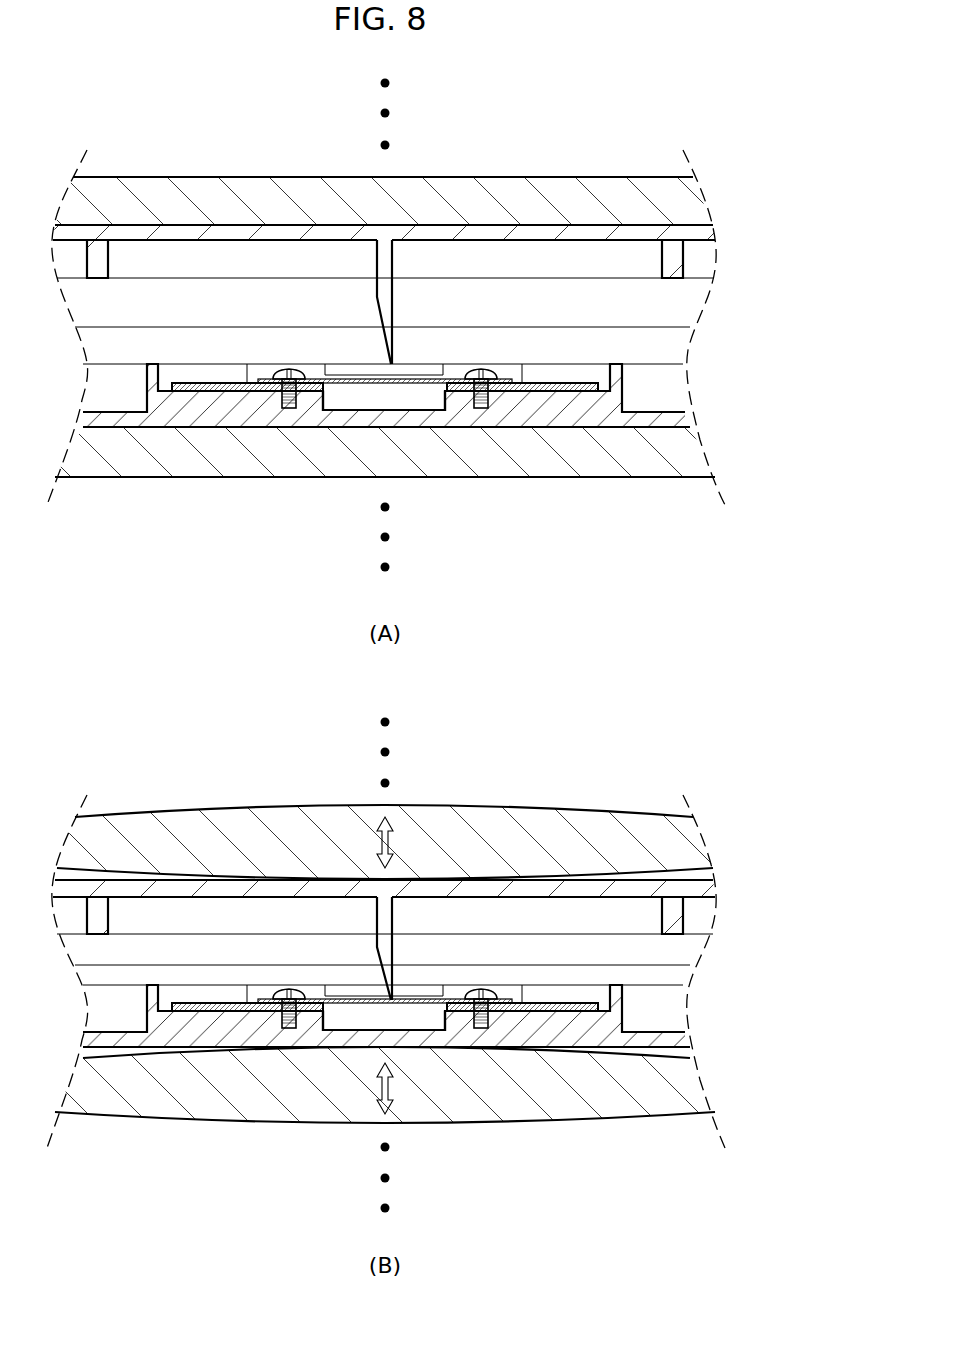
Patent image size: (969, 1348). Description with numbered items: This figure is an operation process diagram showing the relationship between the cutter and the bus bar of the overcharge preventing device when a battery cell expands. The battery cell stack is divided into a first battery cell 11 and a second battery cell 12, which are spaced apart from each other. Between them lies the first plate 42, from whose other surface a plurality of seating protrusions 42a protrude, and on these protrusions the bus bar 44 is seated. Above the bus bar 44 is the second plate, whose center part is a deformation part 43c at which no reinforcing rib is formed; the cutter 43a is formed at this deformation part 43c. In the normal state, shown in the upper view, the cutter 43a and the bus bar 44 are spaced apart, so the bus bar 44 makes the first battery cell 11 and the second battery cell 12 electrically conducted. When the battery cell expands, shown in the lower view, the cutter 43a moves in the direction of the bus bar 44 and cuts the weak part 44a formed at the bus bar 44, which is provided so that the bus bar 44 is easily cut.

The first battery cell 11 is at (565, 450).
The second battery cell 12 is at (613, 193).
The first plate 42 is at (656, 422).
The seating protrusions 42a is at (310, 400).
The cutter 43a is at (388, 293).
The deformation part 43c is at (546, 233).
The bus bar 44 is at (212, 393).
The weak part 44a is at (410, 386).